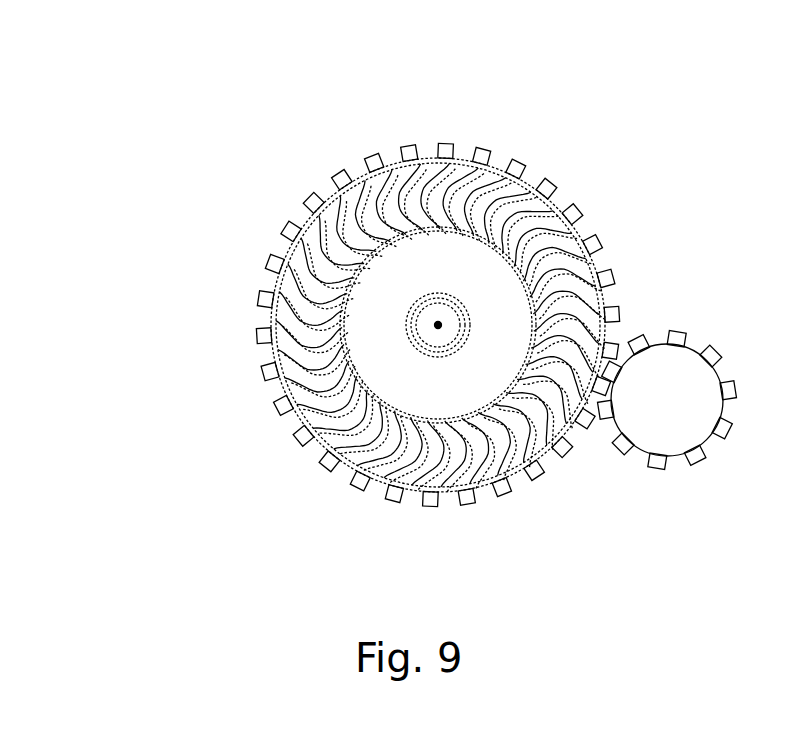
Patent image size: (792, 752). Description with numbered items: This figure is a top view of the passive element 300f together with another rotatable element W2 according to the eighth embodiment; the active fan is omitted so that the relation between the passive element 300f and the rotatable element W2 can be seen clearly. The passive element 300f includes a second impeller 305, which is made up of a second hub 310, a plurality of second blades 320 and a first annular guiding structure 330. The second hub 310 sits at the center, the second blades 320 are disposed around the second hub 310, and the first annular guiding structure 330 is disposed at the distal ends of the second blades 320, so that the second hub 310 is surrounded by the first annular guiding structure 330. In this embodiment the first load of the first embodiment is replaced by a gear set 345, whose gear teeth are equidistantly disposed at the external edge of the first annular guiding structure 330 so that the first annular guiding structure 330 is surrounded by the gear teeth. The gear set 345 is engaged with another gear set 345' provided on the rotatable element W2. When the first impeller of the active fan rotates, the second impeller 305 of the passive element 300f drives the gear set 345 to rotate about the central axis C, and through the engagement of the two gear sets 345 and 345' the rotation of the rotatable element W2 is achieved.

The passive element 300f is at (310, 118).
The second impeller 305 is at (177, 179).
The second hub 310 is at (390, 318).
The second blades 320 is at (293, 362).
The first annular guiding structure 330 is at (347, 470).
The gear set 345 is at (462, 324).
The gear set 345' is at (688, 355).
The central axis C is at (438, 330).
The rotatable element W2 is at (671, 422).